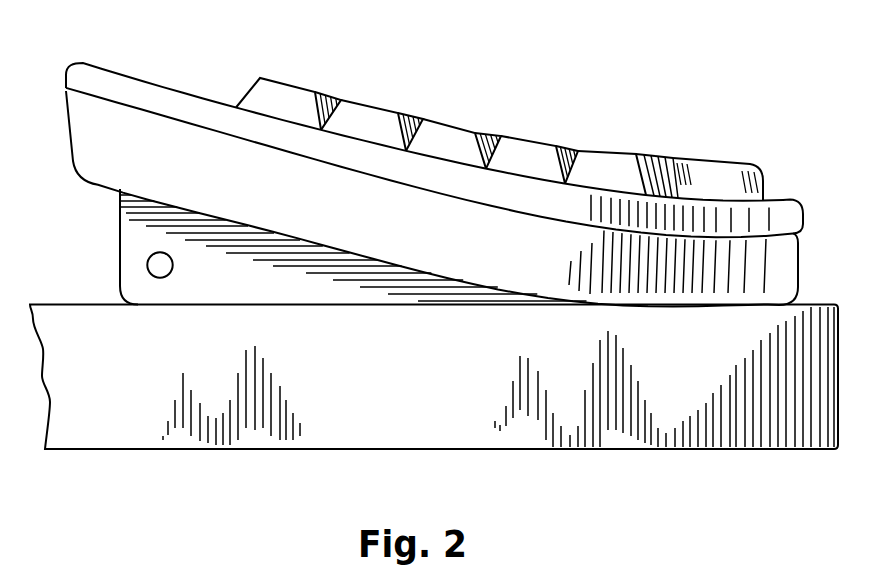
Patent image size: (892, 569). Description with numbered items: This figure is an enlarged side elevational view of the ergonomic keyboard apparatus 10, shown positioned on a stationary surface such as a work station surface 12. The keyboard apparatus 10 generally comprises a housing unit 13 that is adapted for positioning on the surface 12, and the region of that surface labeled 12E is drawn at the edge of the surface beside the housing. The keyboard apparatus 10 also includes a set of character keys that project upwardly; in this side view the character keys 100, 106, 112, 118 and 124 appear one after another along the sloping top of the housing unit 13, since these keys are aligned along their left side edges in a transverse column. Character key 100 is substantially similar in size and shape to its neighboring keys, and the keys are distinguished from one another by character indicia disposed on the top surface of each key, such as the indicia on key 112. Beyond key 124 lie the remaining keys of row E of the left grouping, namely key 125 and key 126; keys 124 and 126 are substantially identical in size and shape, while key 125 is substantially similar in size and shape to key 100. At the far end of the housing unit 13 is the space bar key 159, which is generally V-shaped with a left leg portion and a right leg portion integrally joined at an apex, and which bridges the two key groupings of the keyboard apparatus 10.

The ergonomic keyboard apparatus 10 is at (827, 223).
The work station surface 12 is at (825, 410).
The edge of support surface 12E is at (836, 330).
The housing unit 13 is at (80, 133).
The character key 100 is at (253, 94).
The character key 106 is at (338, 97).
The character key 112 is at (413, 112).
The character key 118 is at (497, 132).
The character key 124 is at (591, 145).
The character key 125 is at (641, 148).
The character key 126 is at (657, 151).
The space bar key 159 is at (712, 158).